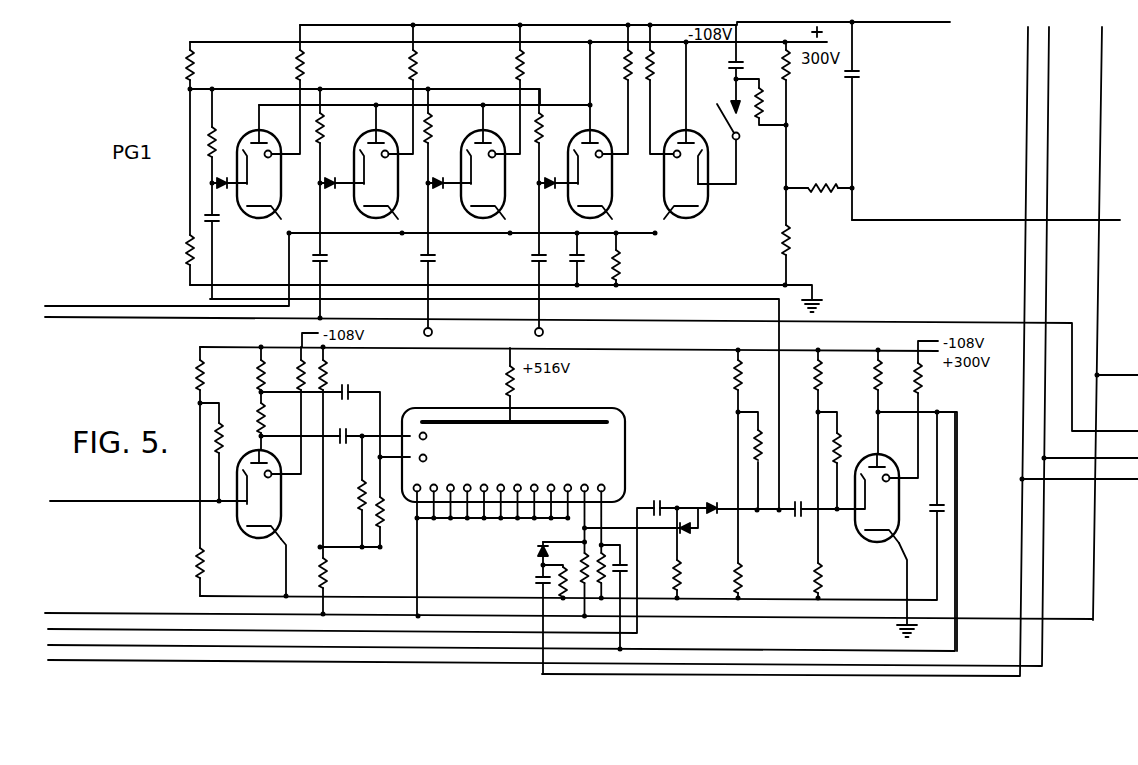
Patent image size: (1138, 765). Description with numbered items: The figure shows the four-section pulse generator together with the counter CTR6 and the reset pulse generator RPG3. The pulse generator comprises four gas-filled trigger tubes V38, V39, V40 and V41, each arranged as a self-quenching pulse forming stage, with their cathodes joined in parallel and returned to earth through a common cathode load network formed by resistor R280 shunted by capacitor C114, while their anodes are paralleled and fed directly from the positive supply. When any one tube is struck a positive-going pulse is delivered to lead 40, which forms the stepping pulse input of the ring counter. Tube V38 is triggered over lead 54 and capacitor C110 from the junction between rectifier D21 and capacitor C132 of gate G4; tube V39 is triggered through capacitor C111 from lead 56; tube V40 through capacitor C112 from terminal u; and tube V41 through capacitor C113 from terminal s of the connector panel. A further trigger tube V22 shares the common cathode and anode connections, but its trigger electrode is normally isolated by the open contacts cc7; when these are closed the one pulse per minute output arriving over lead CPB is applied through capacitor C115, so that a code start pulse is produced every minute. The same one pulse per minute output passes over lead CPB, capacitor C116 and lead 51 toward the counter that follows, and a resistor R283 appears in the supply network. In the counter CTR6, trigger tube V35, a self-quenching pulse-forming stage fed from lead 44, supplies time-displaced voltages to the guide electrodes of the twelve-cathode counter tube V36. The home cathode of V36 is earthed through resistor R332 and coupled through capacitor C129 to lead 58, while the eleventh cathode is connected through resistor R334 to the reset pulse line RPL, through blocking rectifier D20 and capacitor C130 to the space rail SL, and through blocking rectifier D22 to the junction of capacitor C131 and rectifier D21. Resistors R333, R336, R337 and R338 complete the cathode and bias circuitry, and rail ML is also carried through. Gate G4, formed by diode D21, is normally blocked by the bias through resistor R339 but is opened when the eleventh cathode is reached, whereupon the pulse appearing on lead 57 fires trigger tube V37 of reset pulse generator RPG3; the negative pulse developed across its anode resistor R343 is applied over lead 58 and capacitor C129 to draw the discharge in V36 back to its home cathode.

The gas-filled trigger tube V38 is at (256, 122).
The gas-filled trigger tube V39 is at (366, 140).
The gas-filled trigger tube V40 is at (474, 140).
The gas-filled trigger tube V41 is at (583, 140).
The further gas-filled trigger tube V22 is at (691, 133).
The capacitor C110 is at (230, 257).
The capacitor C111 is at (342, 287).
The capacitor C112 is at (453, 291).
The capacitor C113 is at (533, 255).
The capacitor C114 is at (576, 256).
The capacitor C115 is at (739, 75).
The capacitor C116 is at (876, 121).
The resistor R280 is at (640, 259).
The resistor R283 is at (820, 178).
The contacts cc7 is at (716, 109).
The lead CPB is at (929, 23).
The space rail SL is at (512, 671).
The rail ML is at (1049, 62).
The reset pulse line RPL is at (1100, 113).
The lead 51 is at (982, 220).
The lead 40 is at (142, 306).
The lead 56 is at (121, 321).
The terminal u is at (436, 337).
The terminal s is at (545, 337).
The lead 54 is at (780, 334).
The lead 44 is at (121, 503).
The lead 57 is at (166, 629).
The lead 58 is at (125, 645).
The gas-filled trigger tube V35 is at (257, 523).
The twelve-cathode counter tube V36 is at (513, 503).
The counter CTR6 is at (540, 494).
The gas-filled trigger tube V37 is at (886, 545).
The resistor R332 is at (603, 552).
The resistor R333 is at (560, 580).
The resistor R334 is at (580, 549).
The resistor R336 is at (696, 554).
The resistor R337 is at (754, 456).
The resistor R338 is at (752, 581).
The resistor R339 is at (752, 440).
The resistor R343 is at (915, 496).
The blocking rectifier D20 is at (540, 553).
The rectifier D21 is at (712, 497).
The blocking rectifier D22 is at (699, 534).
The capacitor C129 is at (623, 567).
The capacitor C130 is at (540, 582).
The capacitor C131 is at (656, 497).
The capacitor C132 is at (864, 532).
The gate G4 is at (705, 472).
The reset pulse generator RPG3 is at (971, 399).